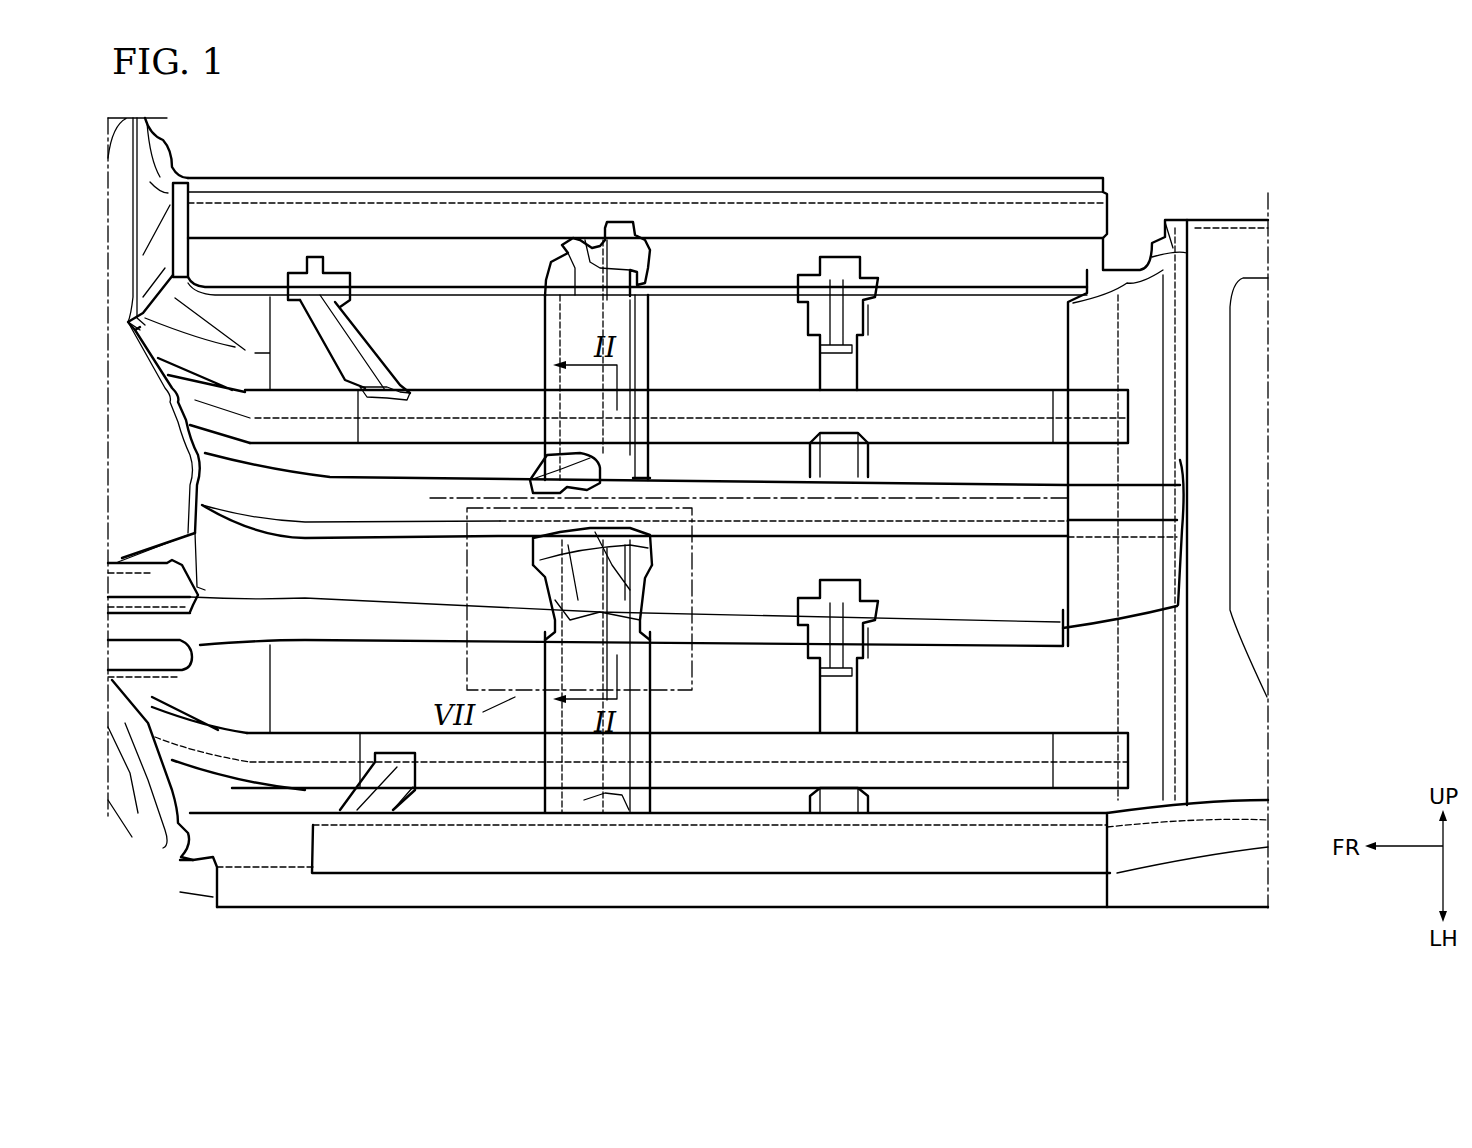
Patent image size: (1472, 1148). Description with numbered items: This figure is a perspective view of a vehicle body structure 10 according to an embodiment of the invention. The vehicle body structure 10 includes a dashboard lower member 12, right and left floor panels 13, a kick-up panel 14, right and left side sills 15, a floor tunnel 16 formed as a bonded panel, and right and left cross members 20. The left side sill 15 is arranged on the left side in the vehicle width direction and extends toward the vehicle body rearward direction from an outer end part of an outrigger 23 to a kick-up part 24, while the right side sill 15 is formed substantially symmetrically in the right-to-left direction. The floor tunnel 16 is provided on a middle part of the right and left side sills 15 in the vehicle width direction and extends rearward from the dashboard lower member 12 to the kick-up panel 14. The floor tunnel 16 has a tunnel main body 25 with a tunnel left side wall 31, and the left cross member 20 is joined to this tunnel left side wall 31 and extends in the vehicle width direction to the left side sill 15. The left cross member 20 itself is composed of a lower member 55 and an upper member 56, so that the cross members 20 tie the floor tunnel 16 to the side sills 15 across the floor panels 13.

The vehicle body structure 10 is at (447, 158).
The dashboard lower member 12 is at (235, 712).
The floor panels 13 is at (745, 335).
The kick-up panel 14 is at (1140, 673).
The side sills 15 is at (890, 182).
The floor tunnel 16 is at (777, 478).
The cross members 20 is at (485, 470).
The outrigger 23 is at (140, 825).
The kick-up part 24 is at (1213, 883).
The tunnel main body 25 is at (892, 482).
The tunnel left side wall 31 is at (734, 594).
The lower member 55 is at (577, 327).
The upper member 56 is at (590, 453).